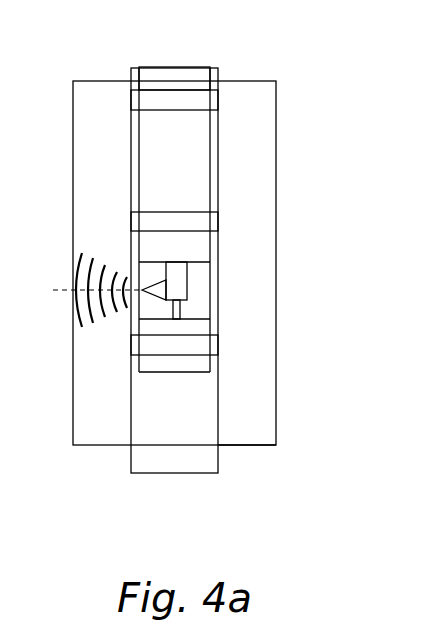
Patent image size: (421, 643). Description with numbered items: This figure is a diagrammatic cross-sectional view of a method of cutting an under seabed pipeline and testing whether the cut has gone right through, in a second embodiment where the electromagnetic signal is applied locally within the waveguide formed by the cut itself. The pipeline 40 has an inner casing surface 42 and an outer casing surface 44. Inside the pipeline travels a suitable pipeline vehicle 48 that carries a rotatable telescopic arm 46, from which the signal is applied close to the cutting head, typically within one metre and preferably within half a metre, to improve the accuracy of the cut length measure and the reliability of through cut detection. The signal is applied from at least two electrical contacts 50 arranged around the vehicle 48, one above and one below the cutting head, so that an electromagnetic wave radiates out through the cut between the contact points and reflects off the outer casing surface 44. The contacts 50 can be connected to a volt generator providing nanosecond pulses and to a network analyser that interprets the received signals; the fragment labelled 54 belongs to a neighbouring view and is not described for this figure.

The pipeline 40 is at (242, 447).
The inner casing surface 42 is at (165, 458).
The outer casing surface 44 is at (277, 118).
The rotatable telescopic arm 46 is at (183, 310).
The pipeline vehicle 48 is at (170, 67).
The electrical contacts 50 is at (220, 225).
The component of adjacent figure 54 is at (420, 593).